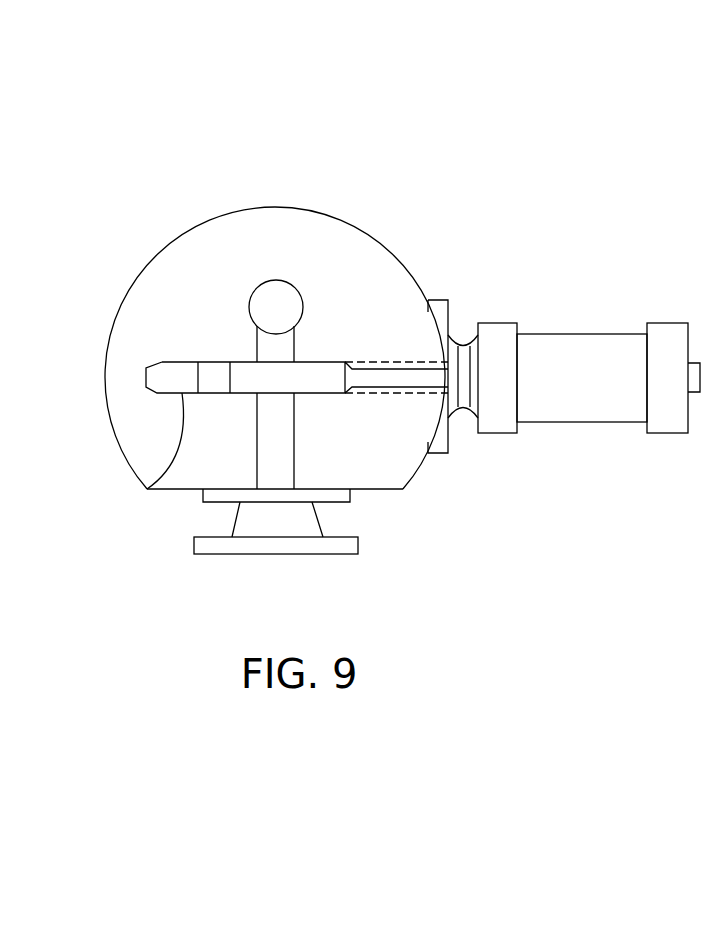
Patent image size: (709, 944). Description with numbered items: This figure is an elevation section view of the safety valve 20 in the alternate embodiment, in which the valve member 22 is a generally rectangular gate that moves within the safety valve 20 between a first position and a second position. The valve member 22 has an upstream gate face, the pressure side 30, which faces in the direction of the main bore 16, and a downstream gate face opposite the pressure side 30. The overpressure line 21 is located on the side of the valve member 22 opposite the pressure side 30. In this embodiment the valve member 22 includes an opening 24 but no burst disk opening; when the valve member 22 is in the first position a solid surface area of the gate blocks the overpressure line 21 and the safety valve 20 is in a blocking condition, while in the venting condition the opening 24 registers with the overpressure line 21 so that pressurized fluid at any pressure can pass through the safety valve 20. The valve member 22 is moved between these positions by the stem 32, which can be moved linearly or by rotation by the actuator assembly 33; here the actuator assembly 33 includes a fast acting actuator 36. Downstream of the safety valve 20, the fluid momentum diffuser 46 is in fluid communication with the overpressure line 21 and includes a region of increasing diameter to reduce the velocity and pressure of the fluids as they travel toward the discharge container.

The safety valve 20 is at (206, 136).
The main bore 16 is at (275, 307).
The pressure side 30 is at (240, 360).
The stem 32 is at (378, 378).
The fast acting actuator 36 is at (550, 333).
The opening 24 is at (215, 373).
The valve member 22 is at (168, 490).
The overpressure line 21 is at (283, 440).
The fluid momentum diffuser 46 is at (300, 522).
The actuator assembly 33 is at (586, 456).